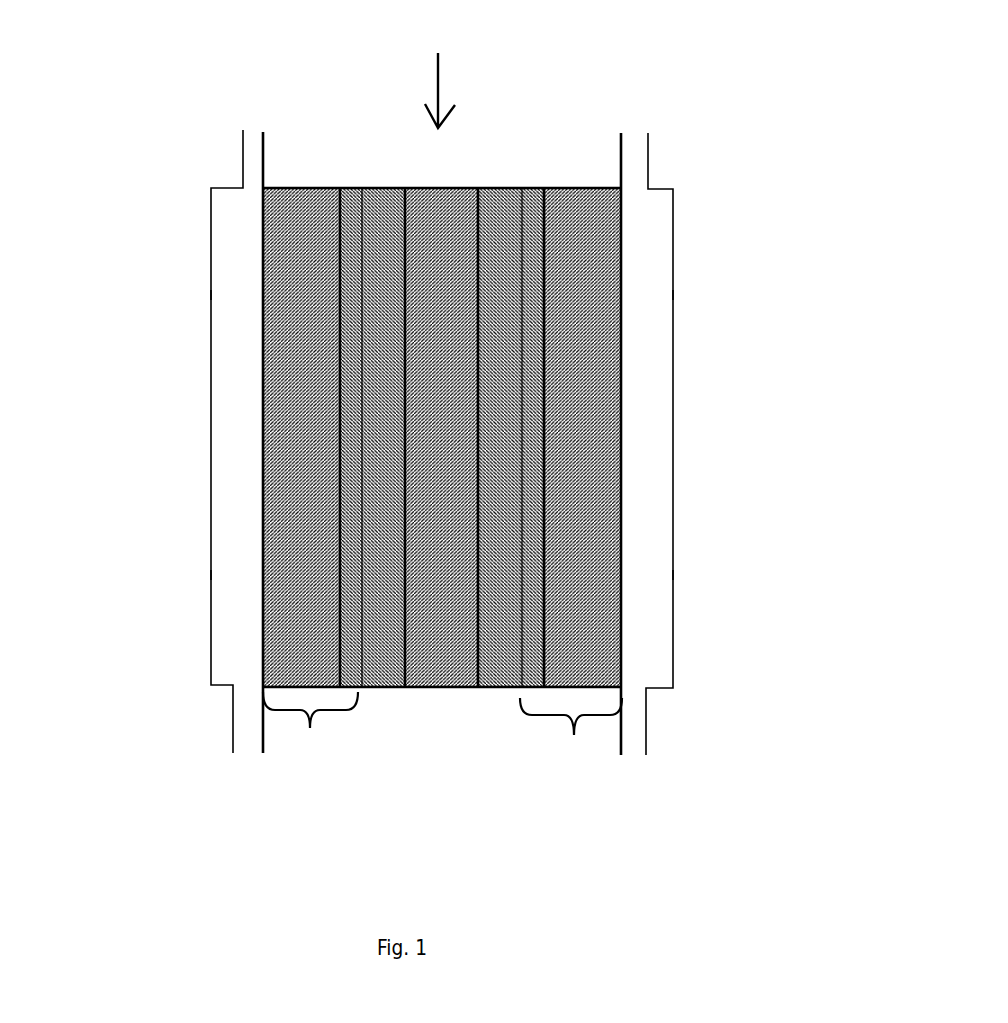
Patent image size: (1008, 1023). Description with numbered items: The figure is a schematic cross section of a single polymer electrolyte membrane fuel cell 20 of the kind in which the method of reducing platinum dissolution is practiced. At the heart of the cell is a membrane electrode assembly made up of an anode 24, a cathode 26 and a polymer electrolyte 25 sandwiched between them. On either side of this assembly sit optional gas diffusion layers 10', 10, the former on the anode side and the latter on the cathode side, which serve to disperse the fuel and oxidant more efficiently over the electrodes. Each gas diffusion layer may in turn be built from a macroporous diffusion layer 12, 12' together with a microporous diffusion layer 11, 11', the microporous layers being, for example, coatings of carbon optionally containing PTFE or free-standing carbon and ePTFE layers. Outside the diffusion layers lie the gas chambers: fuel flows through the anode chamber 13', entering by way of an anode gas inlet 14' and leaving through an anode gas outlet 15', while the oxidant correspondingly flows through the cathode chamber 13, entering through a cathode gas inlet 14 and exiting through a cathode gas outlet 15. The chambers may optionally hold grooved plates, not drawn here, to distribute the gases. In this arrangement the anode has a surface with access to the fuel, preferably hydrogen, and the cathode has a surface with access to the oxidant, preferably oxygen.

The gas diffusion layer 10 is at (571, 747).
The gas diffusion layer 10' is at (310, 740).
The microporous diffusion layer 11 is at (545, 370).
The microporous diffusion layer 11' is at (332, 369).
The macroporous diffusion layer 12 is at (609, 366).
The macroporous diffusion layer 12' is at (271, 365).
The cathode chamber 13 is at (730, 435).
The anode chamber 13' is at (155, 435).
The cathode gas inlet 14 is at (720, 662).
The anode gas inlet 14' is at (157, 661).
The cathode gas outlet 15 is at (725, 216).
The anode gas outlet 15' is at (162, 215).
The PEM fuel cell 20 is at (432, 68).
The anode 24 is at (382, 680).
The polymer electrolyte 25 is at (440, 680).
The cathode 26 is at (500, 675).